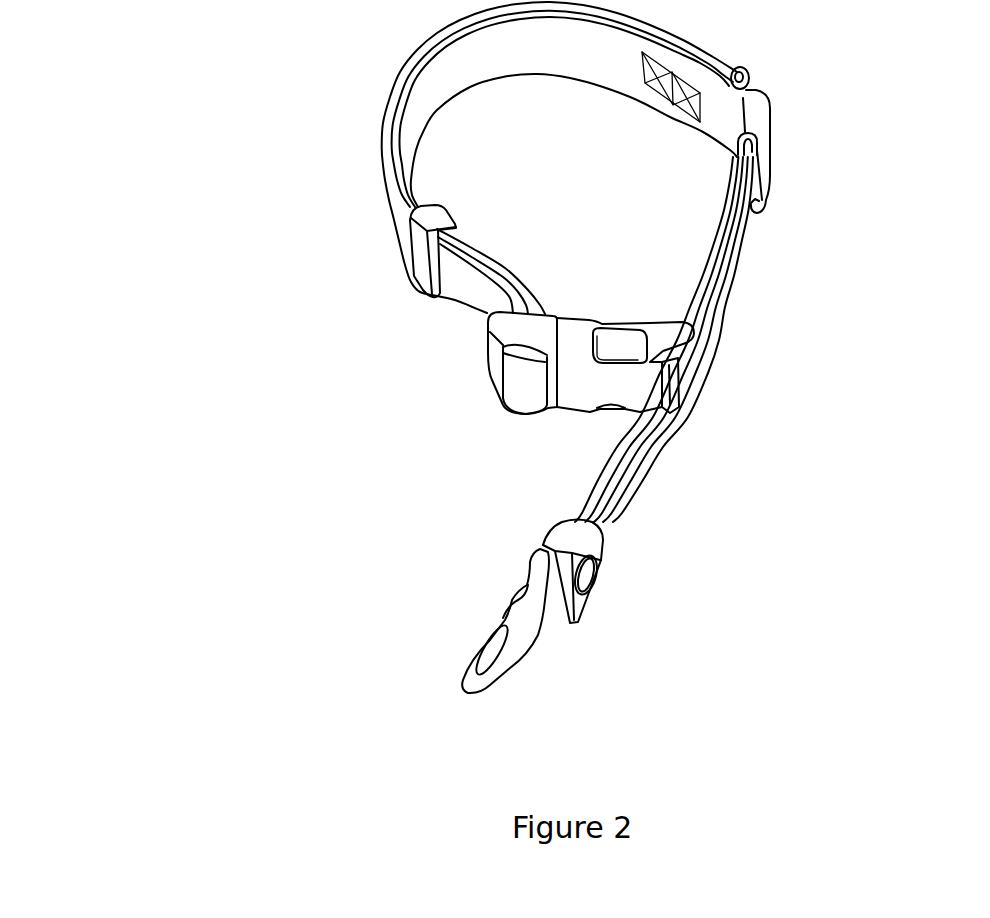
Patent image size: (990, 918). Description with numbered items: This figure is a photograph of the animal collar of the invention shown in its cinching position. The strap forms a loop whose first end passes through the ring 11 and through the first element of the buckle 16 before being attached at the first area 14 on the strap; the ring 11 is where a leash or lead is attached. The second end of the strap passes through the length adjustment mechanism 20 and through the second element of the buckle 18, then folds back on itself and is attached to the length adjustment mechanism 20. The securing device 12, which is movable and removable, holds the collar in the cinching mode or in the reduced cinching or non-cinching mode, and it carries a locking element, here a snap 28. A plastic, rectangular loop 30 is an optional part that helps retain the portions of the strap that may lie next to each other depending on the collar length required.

The ring 11 is at (478, 643).
The securing device 12 is at (597, 540).
The first area 14 is at (740, 222).
The first element of the buckle 16 is at (490, 363).
The second element of the buckle 18 is at (690, 337).
The length adjustment mechanism 20 is at (748, 86).
The snap 28 is at (585, 580).
The plastic rectangular loop 30 is at (413, 253).